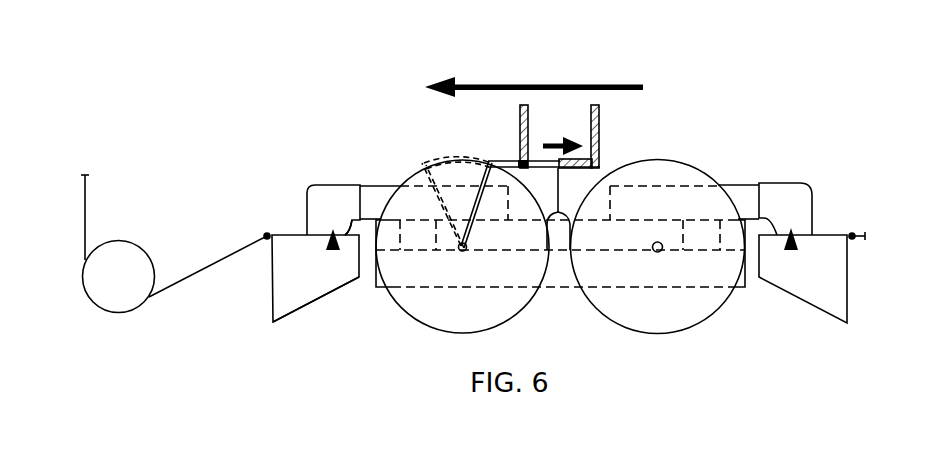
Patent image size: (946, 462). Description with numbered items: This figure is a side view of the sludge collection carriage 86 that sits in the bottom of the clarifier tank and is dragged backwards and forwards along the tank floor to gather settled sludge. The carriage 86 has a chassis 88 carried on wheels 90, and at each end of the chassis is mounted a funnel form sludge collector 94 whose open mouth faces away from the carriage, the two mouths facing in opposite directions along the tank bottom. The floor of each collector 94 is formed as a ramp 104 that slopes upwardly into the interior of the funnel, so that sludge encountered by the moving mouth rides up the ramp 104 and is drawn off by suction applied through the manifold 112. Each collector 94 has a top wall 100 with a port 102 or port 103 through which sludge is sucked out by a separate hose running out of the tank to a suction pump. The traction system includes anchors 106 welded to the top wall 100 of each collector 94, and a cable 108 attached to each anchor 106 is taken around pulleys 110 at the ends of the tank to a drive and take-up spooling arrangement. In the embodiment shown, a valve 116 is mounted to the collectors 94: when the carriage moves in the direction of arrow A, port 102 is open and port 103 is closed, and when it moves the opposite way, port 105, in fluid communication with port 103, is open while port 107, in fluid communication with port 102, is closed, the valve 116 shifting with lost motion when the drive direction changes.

The direction arrow A is at (535, 85).
The sludge collection carriage 86 is at (440, 126).
The chassis 88 is at (560, 272).
The wheels 90 is at (677, 173).
The funnel form sludge collectors 94 is at (293, 289).
The top wall 100 is at (293, 235).
The port 102 is at (333, 250).
The port 103 is at (791, 250).
The ramp 104 is at (341, 288).
The port 105 is at (542, 167).
The anchors 106 is at (266, 234).
The port 107 is at (576, 168).
The cable 108 is at (223, 262).
The pulleys 110 is at (117, 288).
The manifold 112 is at (338, 212).
The valve 116 is at (578, 162).